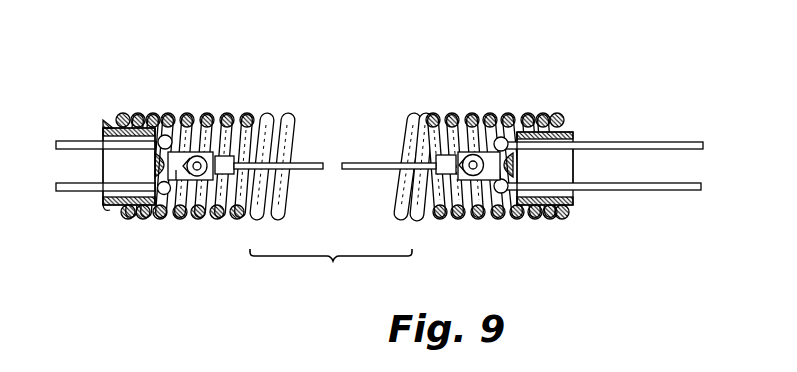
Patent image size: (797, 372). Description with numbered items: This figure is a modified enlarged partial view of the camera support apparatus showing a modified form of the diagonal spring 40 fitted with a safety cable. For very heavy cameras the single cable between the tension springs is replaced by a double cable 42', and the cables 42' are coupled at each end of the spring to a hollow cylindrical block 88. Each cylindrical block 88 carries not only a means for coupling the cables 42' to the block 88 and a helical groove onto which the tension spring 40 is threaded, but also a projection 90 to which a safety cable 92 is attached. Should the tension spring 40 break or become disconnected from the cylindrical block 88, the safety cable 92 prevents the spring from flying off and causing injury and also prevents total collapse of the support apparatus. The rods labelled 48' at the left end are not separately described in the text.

The diagonal spring 40 is at (513, 206).
The double cable 42' is at (604, 167).
The guide rods (left) 48' is at (105, 174).
The cylindrical block 88 is at (101, 206).
The projection 90 is at (181, 181).
The safety cable 92 is at (352, 170).